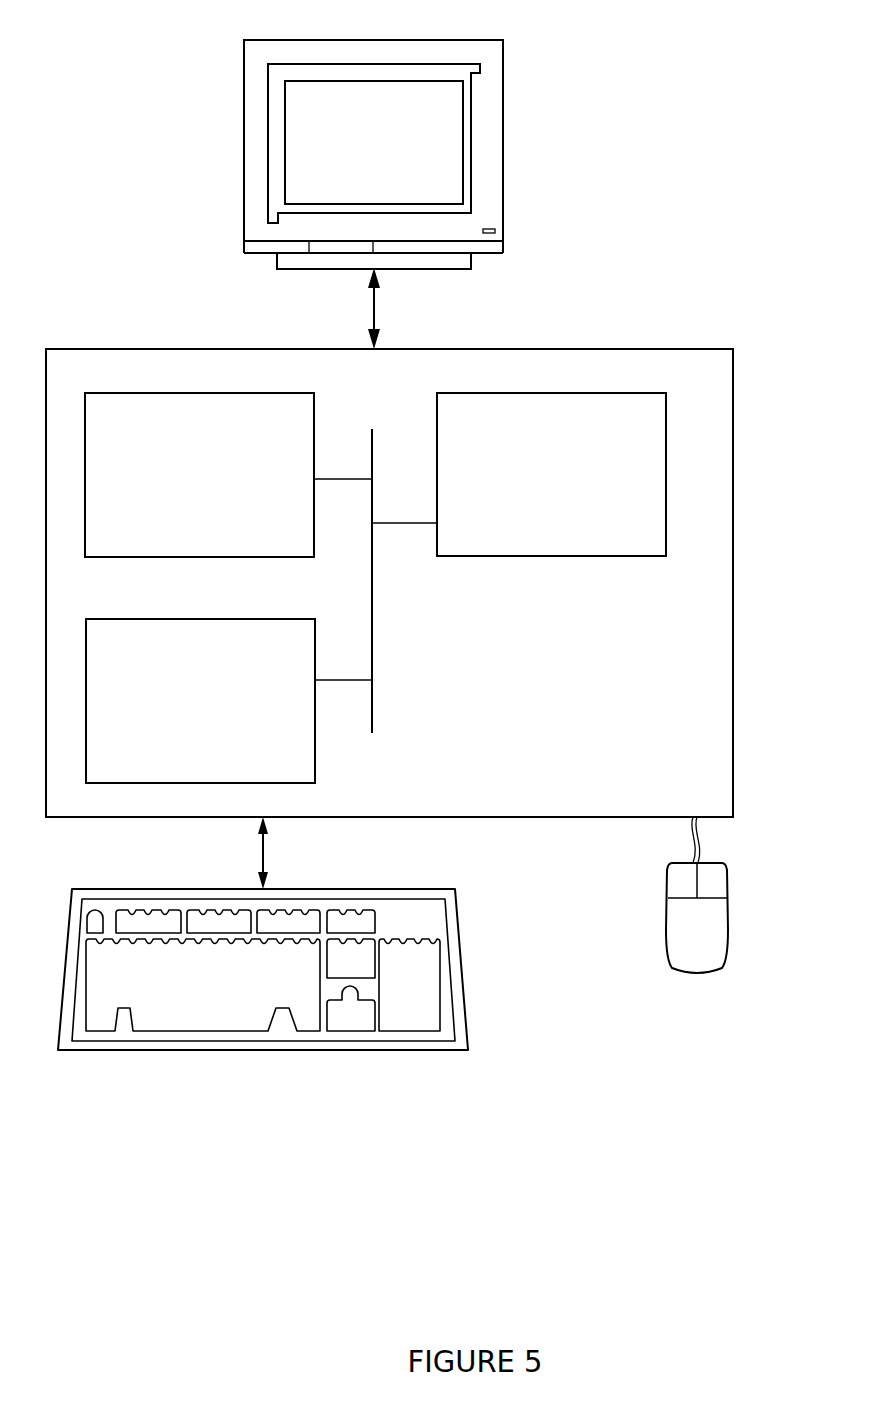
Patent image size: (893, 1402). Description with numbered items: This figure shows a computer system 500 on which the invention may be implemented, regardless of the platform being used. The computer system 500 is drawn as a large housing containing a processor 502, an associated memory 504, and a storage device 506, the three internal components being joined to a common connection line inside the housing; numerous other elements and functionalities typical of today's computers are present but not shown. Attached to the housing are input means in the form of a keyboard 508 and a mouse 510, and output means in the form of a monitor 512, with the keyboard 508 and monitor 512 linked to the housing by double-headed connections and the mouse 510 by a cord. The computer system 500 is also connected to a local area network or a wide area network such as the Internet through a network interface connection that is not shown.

The computer system 500 is at (712, 212).
The processor 502 is at (582, 489).
The memory 504 is at (222, 487).
The storage device 506 is at (220, 714).
The keyboard 508 is at (215, 1007).
The mouse 510 is at (719, 941).
The monitor 512 is at (352, 159).